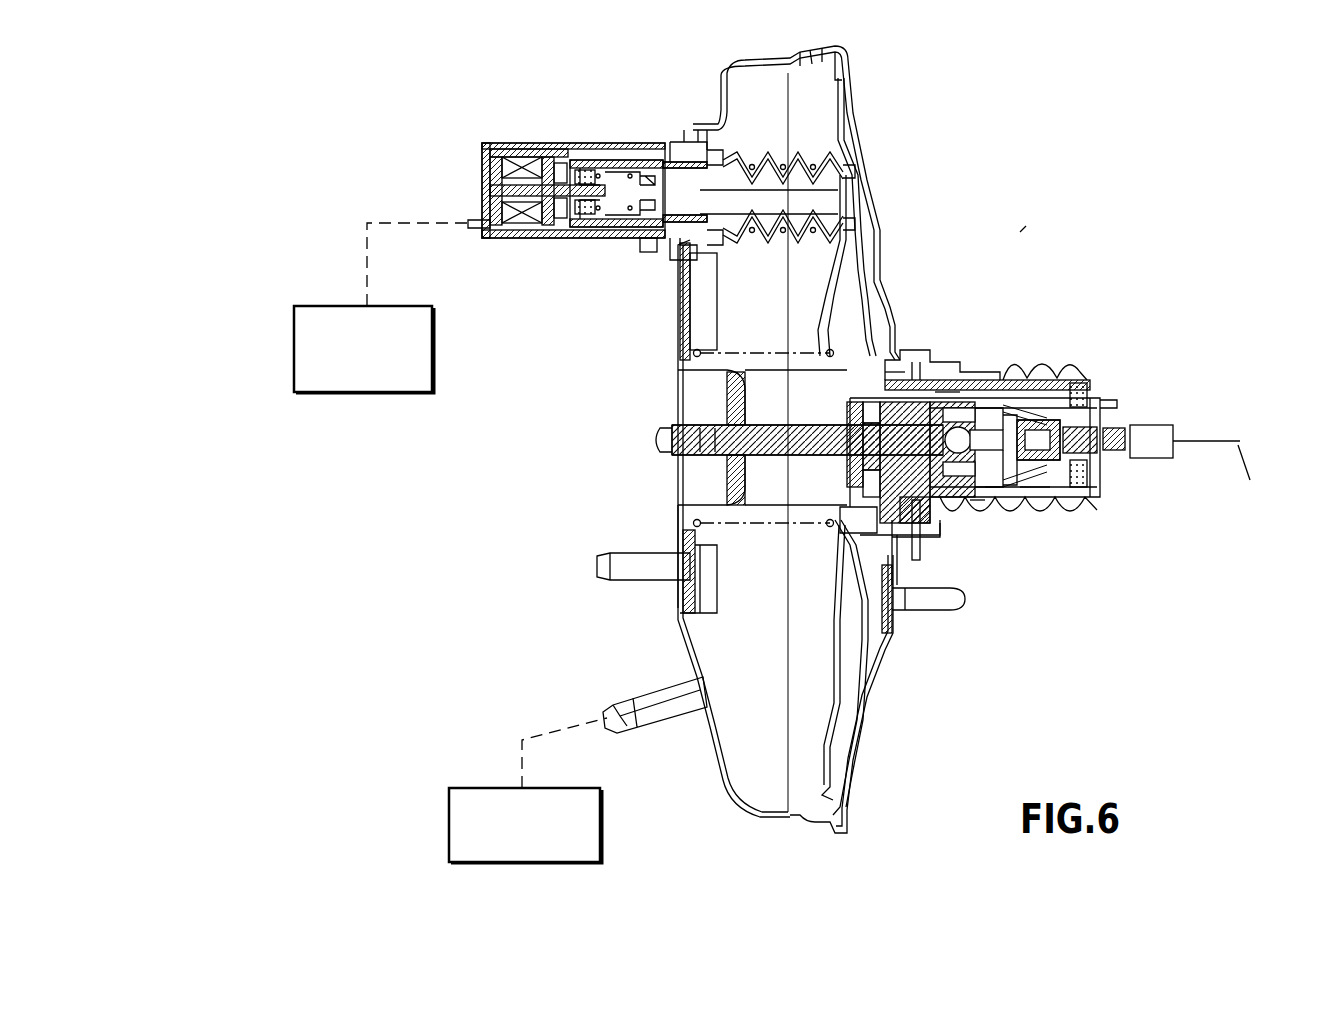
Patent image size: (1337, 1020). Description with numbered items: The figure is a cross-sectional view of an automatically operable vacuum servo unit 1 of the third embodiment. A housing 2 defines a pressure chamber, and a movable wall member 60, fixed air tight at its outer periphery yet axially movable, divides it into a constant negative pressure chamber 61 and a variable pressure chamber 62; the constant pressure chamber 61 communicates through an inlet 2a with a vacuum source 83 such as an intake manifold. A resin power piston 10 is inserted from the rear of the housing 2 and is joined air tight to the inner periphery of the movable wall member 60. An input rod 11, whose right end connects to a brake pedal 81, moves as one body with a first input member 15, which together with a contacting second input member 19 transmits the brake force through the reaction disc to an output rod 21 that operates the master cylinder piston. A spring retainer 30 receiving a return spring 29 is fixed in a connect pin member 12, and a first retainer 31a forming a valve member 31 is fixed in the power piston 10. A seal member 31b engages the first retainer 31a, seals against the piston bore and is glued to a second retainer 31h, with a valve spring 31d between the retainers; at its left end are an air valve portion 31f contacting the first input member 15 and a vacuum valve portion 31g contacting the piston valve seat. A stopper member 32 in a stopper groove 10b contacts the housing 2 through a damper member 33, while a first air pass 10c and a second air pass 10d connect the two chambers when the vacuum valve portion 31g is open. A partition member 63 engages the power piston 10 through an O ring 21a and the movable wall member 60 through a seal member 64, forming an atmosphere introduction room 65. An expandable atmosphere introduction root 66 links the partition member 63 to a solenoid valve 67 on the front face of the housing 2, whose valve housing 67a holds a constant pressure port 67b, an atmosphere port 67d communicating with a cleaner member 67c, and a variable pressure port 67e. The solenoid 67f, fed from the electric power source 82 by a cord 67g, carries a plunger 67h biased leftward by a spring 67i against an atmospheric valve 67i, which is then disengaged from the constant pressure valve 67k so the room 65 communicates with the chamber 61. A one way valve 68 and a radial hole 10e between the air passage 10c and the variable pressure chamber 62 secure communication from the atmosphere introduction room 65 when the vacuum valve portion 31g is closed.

The vacuum servo unit 1 is at (1024, 226).
The housing 2 is at (785, 50).
The inlet 2a is at (648, 693).
The power piston 10 is at (835, 463).
The stopper groove 10b is at (945, 400).
The first air pass 10c is at (890, 365).
The second air pass 10d is at (945, 510).
The hole 10e is at (847, 417).
The input rod 11 is at (1160, 440).
The connect pin member 12 is at (1083, 450).
The first input member 15 is at (955, 420).
The second input member 19 is at (833, 497).
The output rod 21 is at (720, 450).
The O ring 21a is at (890, 350).
The return spring 29 is at (1050, 418).
The spring retainer 30 is at (1077, 507).
The valve member 31 is at (1023, 402).
The first retainer 31a is at (1037, 497).
The seal member 31b is at (1055, 402).
The valve spring 31d is at (1017, 497).
The air valve portion 31f is at (1005, 402).
The vacuum valve portion 31g is at (993, 473).
The second retainer 31h is at (990, 490).
The stopper member 32 is at (938, 560).
The damper member 33 is at (927, 510).
The movable wall member 60 is at (875, 160).
The constant negative pressure chamber 61 is at (760, 100).
The variable pressure chamber 62 is at (862, 270).
The partition member 63 is at (818, 304).
The seal member 64 is at (830, 727).
The atmosphere introduction room 65 is at (850, 673).
The atmosphere introduction root 66 is at (820, 190).
The solenoid valve 67 is at (530, 128).
The valve housing 67a is at (593, 145).
The constant pressure port 67b is at (692, 127).
The cleaner member 67c is at (580, 225).
The atmosphere port 67d is at (640, 258).
The variable pressure port 67e is at (780, 200).
The solenoid 67f is at (515, 240).
The cord 67g is at (476, 220).
The plunger 67h is at (552, 215).
The atmospheric valve 67i is at (600, 158).
The constant pressure valve 67k is at (672, 225).
The one way valve 68 is at (915, 400).
The brake pedal 81 is at (1238, 445).
The electric power source 82 is at (363, 393).
The vacuum source 83 is at (448, 842).